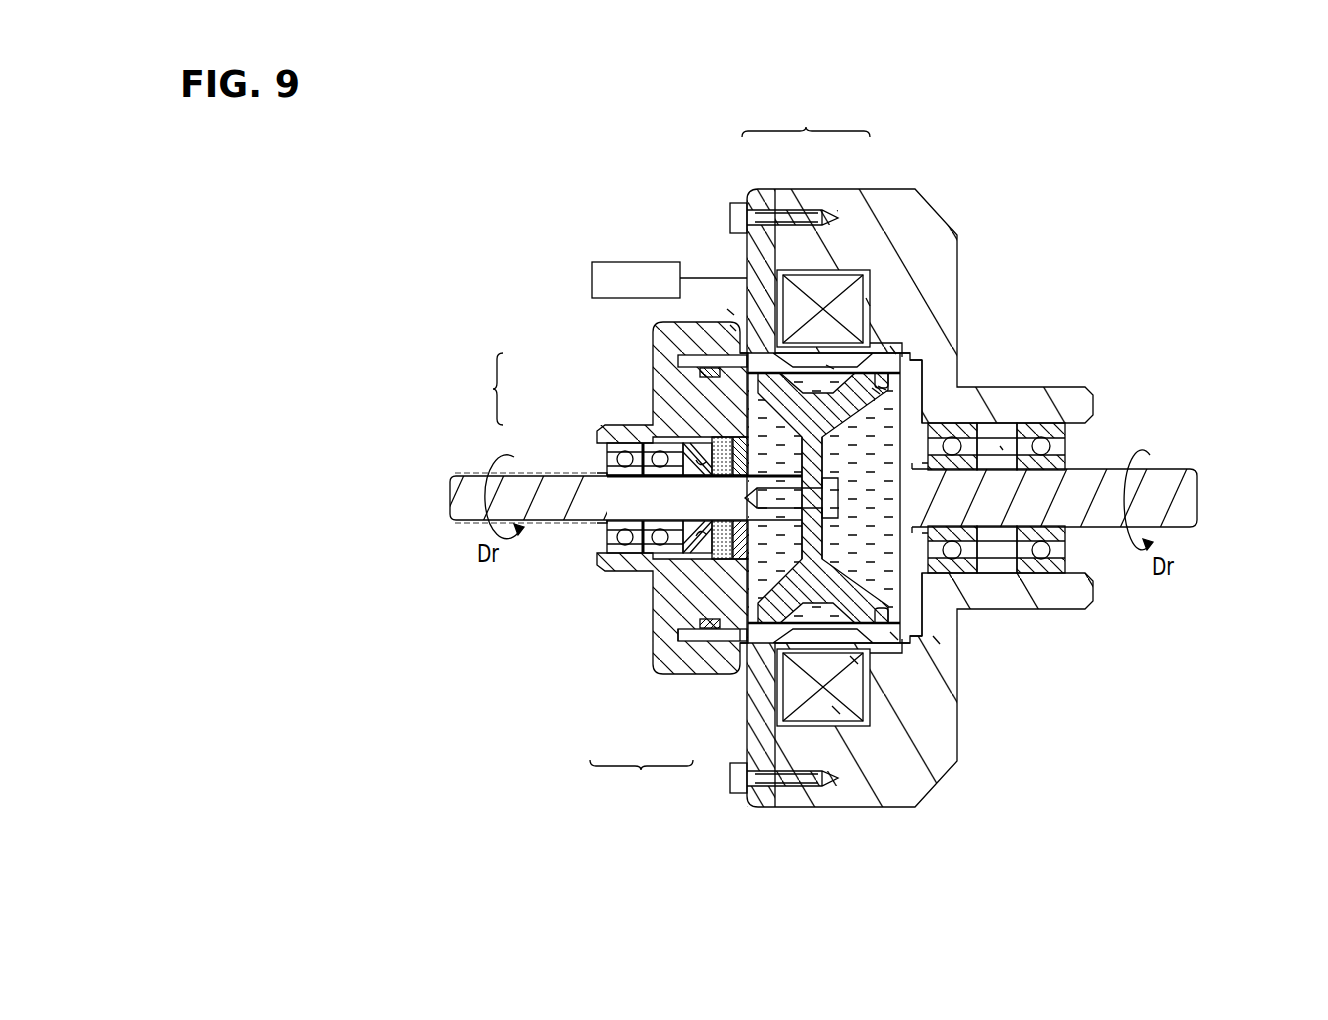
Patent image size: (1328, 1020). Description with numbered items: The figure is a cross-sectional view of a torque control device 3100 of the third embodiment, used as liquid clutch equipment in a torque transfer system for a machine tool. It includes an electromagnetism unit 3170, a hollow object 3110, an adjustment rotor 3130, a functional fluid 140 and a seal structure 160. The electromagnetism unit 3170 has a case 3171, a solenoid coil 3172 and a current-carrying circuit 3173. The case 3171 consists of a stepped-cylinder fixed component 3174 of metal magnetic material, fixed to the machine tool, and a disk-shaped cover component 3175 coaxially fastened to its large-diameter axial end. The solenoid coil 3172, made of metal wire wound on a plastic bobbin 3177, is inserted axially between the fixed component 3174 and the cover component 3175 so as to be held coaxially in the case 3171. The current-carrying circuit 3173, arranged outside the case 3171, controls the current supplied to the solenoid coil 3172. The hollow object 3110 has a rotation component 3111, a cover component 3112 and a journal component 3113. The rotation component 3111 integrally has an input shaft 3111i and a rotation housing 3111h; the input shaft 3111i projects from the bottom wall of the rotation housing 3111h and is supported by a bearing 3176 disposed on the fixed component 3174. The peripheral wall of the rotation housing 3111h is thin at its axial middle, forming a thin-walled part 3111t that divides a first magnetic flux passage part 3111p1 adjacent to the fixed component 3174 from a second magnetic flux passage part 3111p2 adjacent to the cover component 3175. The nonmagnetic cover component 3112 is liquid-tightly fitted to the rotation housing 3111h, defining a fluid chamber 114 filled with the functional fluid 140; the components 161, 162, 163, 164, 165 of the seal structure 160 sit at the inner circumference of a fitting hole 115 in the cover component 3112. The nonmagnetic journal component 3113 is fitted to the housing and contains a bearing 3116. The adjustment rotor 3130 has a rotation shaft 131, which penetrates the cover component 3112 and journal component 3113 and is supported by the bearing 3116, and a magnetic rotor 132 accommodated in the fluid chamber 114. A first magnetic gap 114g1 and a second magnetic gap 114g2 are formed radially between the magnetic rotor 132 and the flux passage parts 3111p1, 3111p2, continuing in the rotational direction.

The torque control device 3100 is at (501, 218).
The electromagnetism unit 3170 is at (913, 190).
The case 3171 is at (806, 118).
The fixed component 3174 is at (845, 207).
The cover component 3175 is at (762, 207).
The solenoid coil 3172 is at (870, 303).
The plastic bobbin 3177 is at (872, 312).
The current-carrying circuit 3173 is at (645, 262).
The bearing 3176 is at (1035, 578).
The fitting hole 115 is at (745, 455).
The seal structure component 165 is at (762, 462).
The rotation component 3111 is at (690, 363).
The input shaft 3111i is at (1192, 510).
The thin-walled part 3111t is at (830, 367).
The first magnetic flux passage part 3111p1 is at (882, 388).
The second magnetic flux passage part 3111p2 is at (738, 337).
The rotation housing 3111h is at (890, 351).
The first magnetic gap 114g1 is at (876, 392).
The second magnetic gap 114g2 is at (733, 328).
The hollow object 3110 is at (474, 389).
The cover component 3112 is at (680, 417).
The journal component 3113 is at (680, 388).
The seal structure component 163 is at (612, 453).
The bearing 3116 is at (700, 522).
The seal structure 160 is at (690, 462).
The seal structure component 164 is at (738, 545).
The rotation shaft 131 is at (675, 640).
The magnetic rotor 132 is at (737, 637).
The adjustment rotor 3130 is at (641, 781).
The fluid chamber 114 is at (937, 640).
The functional fluid 140 is at (895, 635).
The seal structure component 162 is at (855, 660).
The seal structure component 161 is at (837, 710).